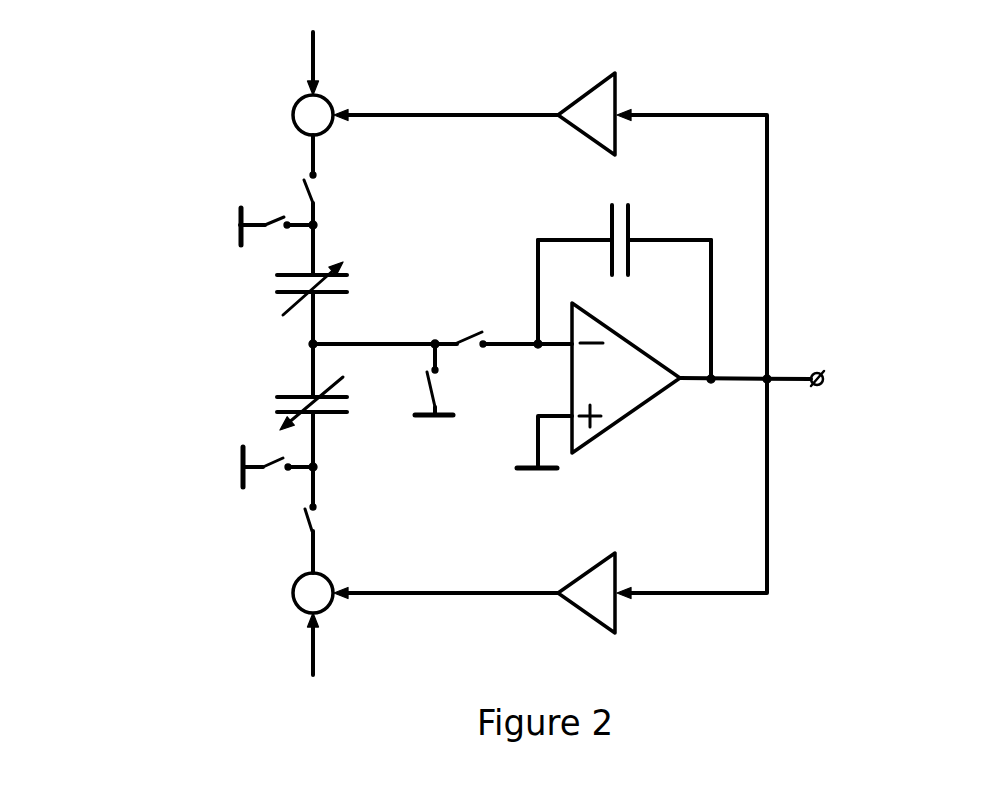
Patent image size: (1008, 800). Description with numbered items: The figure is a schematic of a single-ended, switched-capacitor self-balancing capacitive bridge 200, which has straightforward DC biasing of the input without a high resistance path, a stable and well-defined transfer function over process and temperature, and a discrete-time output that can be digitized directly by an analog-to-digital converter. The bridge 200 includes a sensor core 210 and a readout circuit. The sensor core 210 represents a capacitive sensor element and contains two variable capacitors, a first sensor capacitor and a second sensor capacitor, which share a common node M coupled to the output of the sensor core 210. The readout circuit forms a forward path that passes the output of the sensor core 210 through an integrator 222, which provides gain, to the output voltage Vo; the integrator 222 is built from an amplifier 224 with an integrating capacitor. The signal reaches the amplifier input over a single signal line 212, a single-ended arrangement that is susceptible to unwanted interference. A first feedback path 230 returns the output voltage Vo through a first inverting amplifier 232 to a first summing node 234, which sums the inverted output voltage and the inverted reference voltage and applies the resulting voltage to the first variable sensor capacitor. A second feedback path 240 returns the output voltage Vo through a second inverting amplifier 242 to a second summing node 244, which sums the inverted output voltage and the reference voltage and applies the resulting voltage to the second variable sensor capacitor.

The self-balancing capacitive bridge 200 is at (165, 79).
The sensor core 210 is at (208, 314).
The single signal line 212 is at (428, 297).
The integrator 222 is at (658, 418).
The amplifier 224 is at (592, 437).
The first feedback path 230 is at (763, 193).
The first inverting amplifier 232 is at (583, 98).
The first summing node 234 is at (328, 100).
The second feedback path 240 is at (763, 500).
The second inverting amplifier 242 is at (582, 612).
The second summing node 244 is at (327, 607).